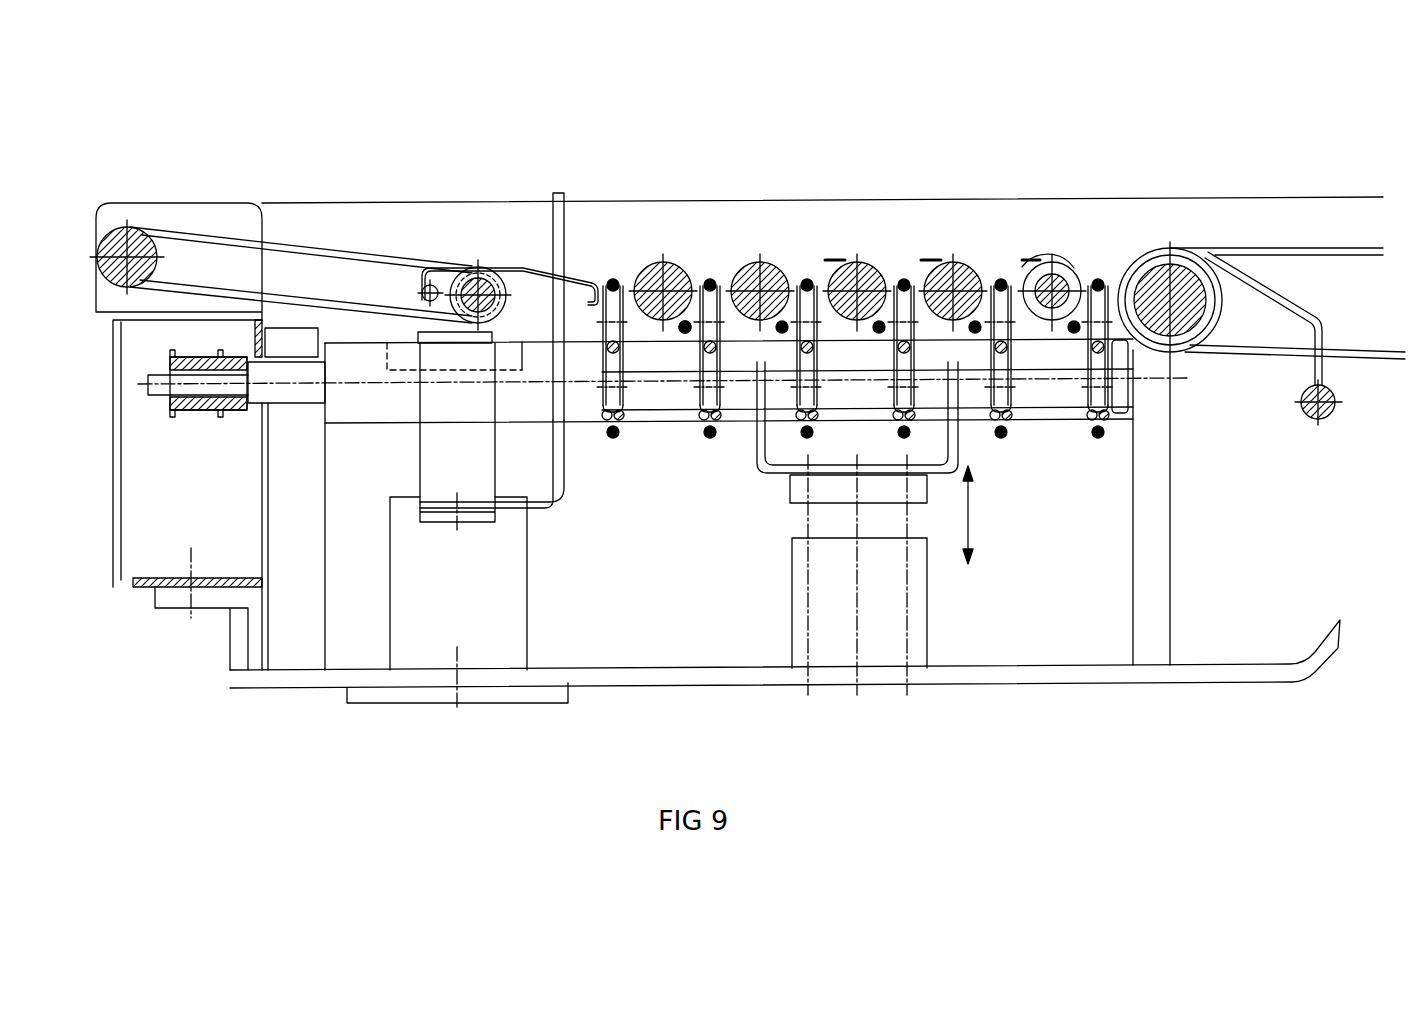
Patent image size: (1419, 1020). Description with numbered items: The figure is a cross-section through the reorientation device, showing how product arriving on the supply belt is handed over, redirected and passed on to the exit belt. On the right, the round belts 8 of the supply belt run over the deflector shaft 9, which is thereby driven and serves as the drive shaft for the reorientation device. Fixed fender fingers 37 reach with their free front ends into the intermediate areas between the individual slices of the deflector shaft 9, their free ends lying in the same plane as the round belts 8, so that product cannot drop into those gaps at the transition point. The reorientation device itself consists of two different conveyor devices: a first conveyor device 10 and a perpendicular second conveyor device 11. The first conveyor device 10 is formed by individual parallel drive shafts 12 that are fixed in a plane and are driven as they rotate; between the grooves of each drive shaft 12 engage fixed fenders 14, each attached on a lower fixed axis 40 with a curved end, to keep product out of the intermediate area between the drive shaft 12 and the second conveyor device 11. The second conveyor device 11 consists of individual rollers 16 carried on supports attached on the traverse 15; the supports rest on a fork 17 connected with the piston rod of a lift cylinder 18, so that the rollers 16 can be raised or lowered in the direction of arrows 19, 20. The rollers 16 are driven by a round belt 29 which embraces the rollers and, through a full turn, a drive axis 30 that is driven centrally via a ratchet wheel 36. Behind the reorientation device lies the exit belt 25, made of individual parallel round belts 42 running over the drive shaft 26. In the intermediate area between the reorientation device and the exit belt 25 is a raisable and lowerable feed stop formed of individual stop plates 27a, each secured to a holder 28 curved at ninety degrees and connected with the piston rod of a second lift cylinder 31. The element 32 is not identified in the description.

The round belt 8 is at (1268, 252).
The deflector shaft 9 is at (1152, 270).
The first conveyor device 10 is at (711, 205).
The second conveyor device 11 is at (988, 275).
The drive shaft 12 is at (612, 278).
The fender 14 is at (652, 259).
The traverse 15 is at (667, 397).
The roller 16 is at (610, 357).
The fork 17 is at (757, 437).
The lift cylinder 18 is at (917, 647).
The arrow 19 is at (973, 496).
The arrow 20 is at (973, 530).
The exit belt 25 is at (202, 247).
The drive shaft 26 is at (465, 265).
The stop plate 27a is at (558, 195).
The holder 28 is at (566, 485).
The round belt 29 is at (592, 282).
The drive axis 30 is at (160, 390).
The second lift cylinder 31 is at (433, 638).
The guide bar 32 is at (520, 262).
The ratchet wheel 36 is at (208, 413).
The fender finger 37 is at (1283, 297).
The lower fixed axis 40 is at (683, 333).
The round belt 42 is at (338, 250).